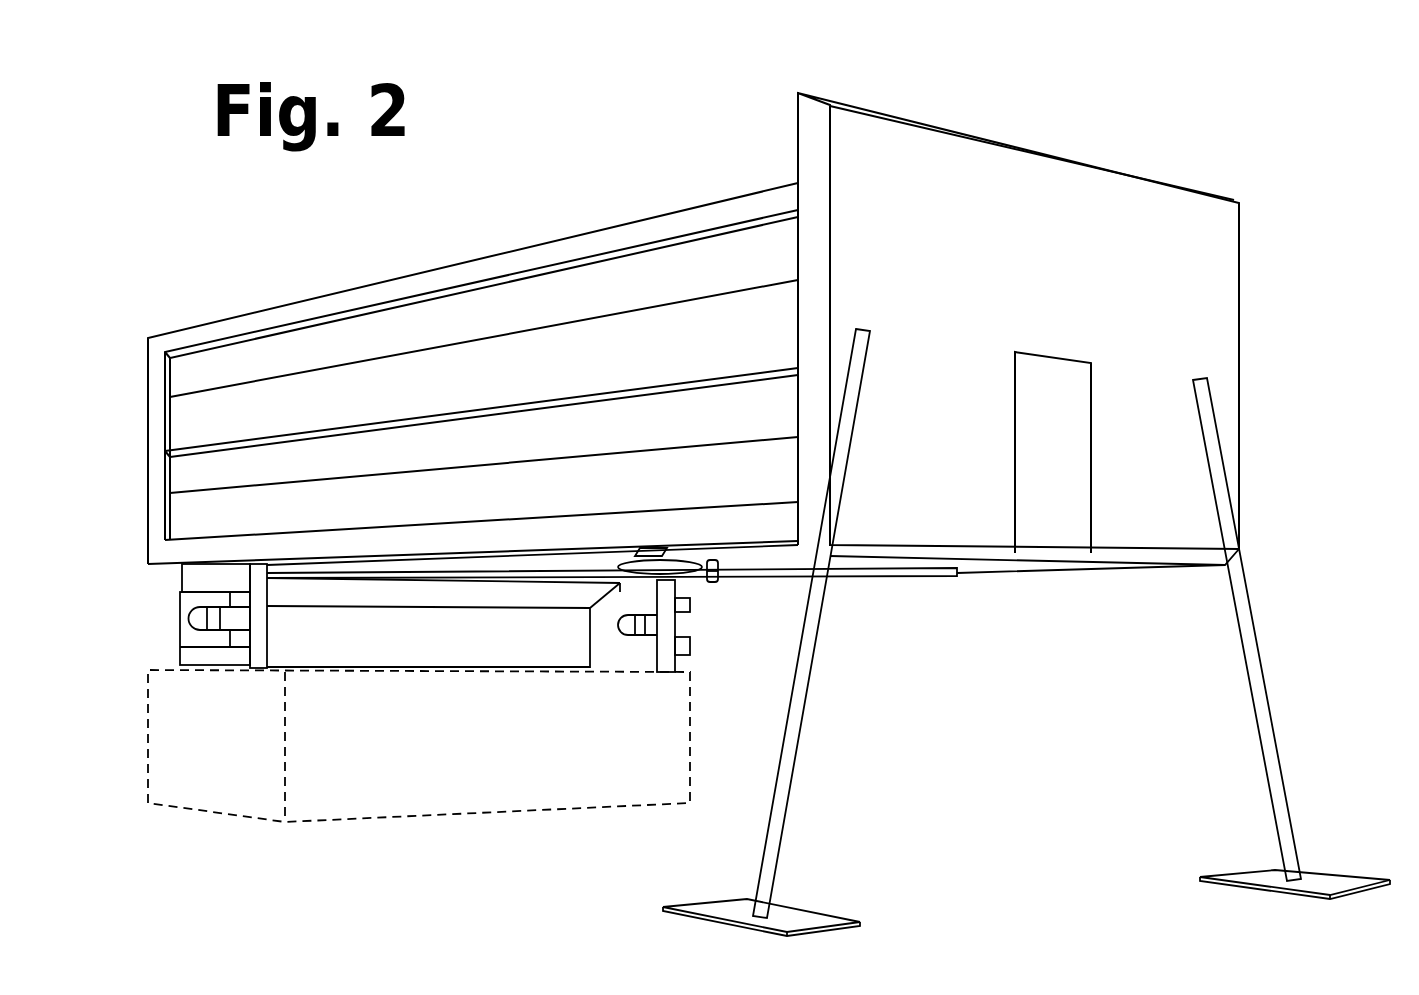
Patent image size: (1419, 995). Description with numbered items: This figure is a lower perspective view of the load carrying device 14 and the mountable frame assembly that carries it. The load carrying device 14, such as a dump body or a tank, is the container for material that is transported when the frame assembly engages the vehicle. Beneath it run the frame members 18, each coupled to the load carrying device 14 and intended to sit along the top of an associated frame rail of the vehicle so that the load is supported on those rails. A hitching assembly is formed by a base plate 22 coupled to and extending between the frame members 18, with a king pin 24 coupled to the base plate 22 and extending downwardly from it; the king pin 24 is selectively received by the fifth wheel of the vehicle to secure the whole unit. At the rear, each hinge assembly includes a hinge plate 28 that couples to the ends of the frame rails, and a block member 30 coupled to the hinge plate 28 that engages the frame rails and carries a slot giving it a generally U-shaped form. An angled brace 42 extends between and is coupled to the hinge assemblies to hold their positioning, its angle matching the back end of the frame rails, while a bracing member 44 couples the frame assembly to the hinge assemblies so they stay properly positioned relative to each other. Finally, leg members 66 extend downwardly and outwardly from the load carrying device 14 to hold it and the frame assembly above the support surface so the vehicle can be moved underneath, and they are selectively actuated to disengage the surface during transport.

The load carrying device 14 is at (602, 292).
The frame members 18 is at (633, 582).
The base plate 22 is at (760, 565).
The king pin 24 is at (722, 578).
The hinge plate 28 is at (200, 577).
The block member 30 is at (188, 636).
The angled brace 42 is at (367, 590).
The bracing member 44 is at (295, 645).
The leg members 66 is at (806, 678).